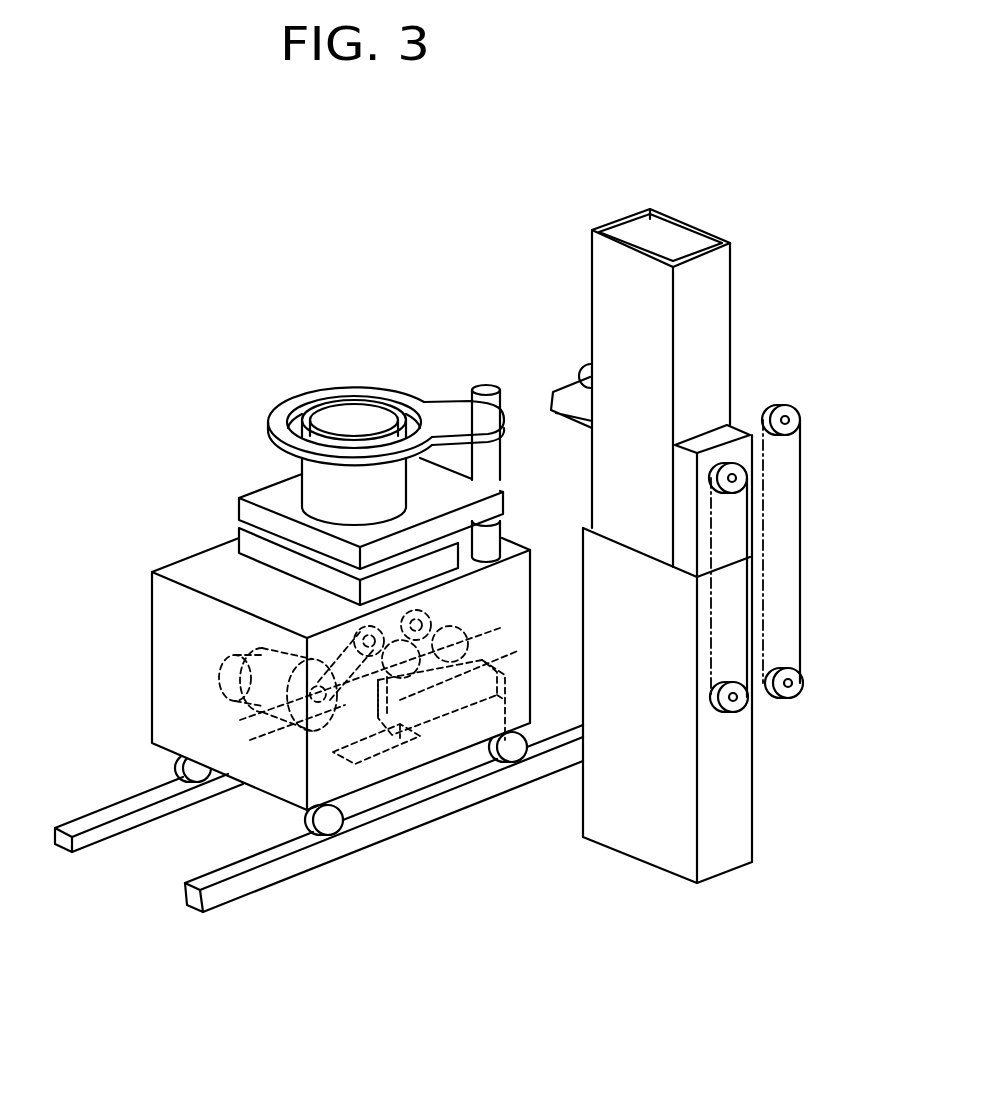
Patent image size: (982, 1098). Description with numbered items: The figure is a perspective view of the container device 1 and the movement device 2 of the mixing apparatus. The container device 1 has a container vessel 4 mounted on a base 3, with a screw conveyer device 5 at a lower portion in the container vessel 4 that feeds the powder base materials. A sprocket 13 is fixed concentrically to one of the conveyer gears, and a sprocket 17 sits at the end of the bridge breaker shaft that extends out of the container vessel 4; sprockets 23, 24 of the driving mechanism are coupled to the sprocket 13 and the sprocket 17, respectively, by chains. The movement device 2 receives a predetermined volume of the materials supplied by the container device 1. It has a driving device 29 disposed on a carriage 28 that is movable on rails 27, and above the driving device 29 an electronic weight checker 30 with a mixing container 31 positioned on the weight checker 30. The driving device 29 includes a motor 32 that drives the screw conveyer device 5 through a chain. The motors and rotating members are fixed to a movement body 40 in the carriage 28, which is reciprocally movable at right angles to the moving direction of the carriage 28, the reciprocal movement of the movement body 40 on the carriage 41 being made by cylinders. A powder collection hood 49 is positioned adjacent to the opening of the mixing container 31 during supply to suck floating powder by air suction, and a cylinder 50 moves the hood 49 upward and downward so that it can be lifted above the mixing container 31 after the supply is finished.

The container device 1 is at (580, 316).
The movement device 2 is at (247, 412).
The base 3 is at (631, 845).
The container vessel 4 is at (685, 228).
The screw conveyer device 5 is at (560, 392).
The sprocket 13 is at (737, 487).
The sprocket 17 is at (782, 405).
The sprocket 23 is at (737, 711).
The sprocket 24 is at (791, 698).
The rails 27 is at (186, 893).
The carriage 28 is at (178, 568).
The driving device 29 is at (377, 770).
The electronic weight checker 30 is at (244, 506).
The mixing container 31 is at (362, 414).
The motor 32 is at (228, 663).
The movement body 40 is at (492, 683).
The carriage 41 is at (441, 752).
The powder collection hood 49 is at (457, 400).
The cylinder 50 is at (502, 537).